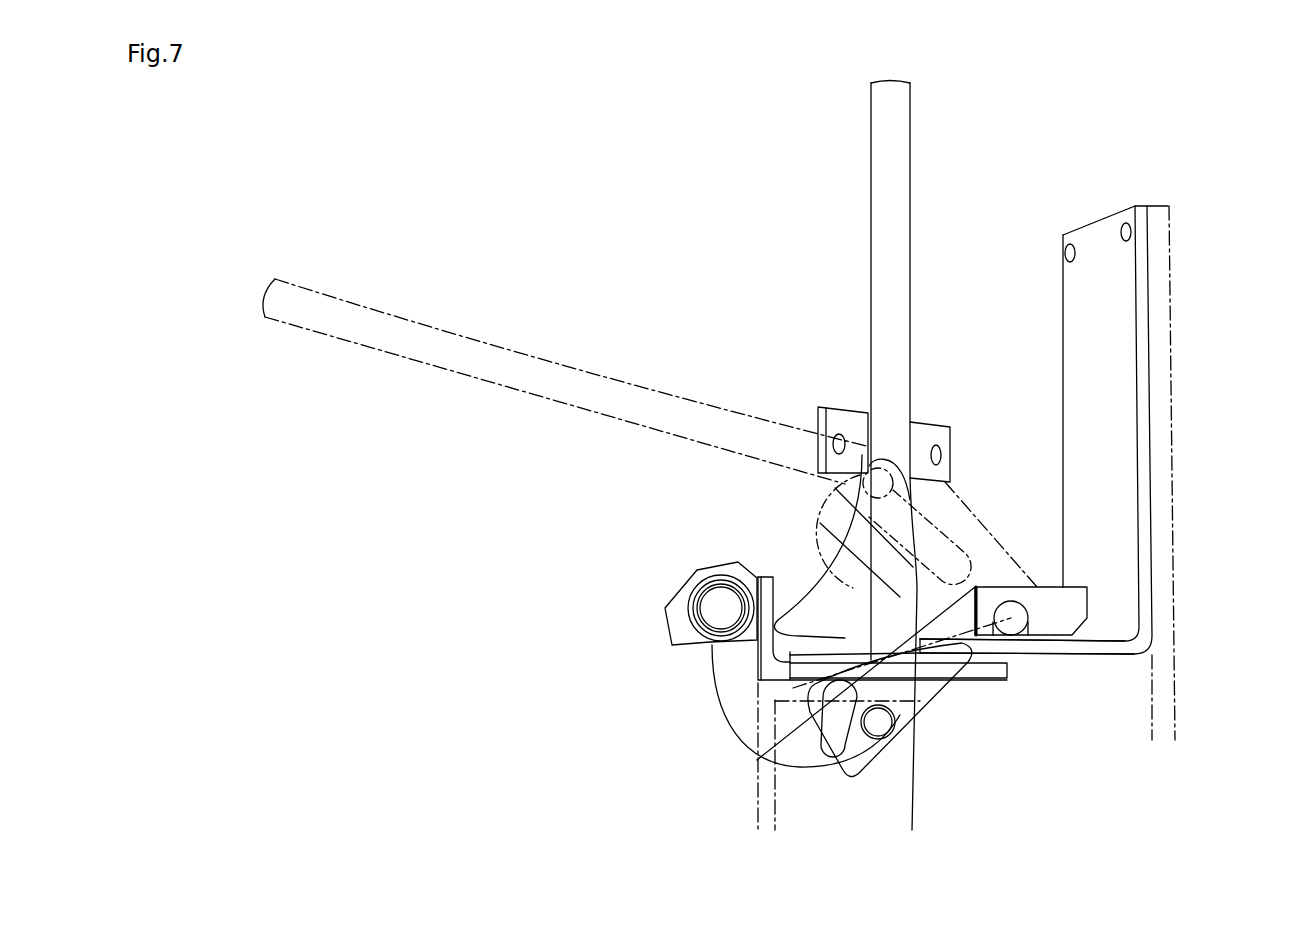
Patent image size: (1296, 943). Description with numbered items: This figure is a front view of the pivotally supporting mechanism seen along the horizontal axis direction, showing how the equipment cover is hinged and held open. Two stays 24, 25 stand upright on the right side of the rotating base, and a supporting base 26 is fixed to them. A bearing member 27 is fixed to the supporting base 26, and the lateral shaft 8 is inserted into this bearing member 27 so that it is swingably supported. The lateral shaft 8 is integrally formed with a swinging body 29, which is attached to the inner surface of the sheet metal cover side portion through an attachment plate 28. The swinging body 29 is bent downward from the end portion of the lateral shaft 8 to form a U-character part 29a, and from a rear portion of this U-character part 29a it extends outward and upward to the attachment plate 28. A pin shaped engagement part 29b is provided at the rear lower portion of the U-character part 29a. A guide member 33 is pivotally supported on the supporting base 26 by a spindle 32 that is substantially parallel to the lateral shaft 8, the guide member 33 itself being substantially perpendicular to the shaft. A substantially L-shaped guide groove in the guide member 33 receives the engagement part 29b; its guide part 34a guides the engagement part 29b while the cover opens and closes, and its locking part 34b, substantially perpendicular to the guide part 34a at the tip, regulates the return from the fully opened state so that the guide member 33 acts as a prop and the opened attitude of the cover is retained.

The lateral shaft 8 is at (712, 612).
The stay 24 is at (1173, 492).
The stay 25 is at (764, 789).
The supporting base 26 is at (980, 656).
The bearing member 27 is at (700, 570).
The attachment plate 28 is at (923, 420).
The swinging body 29 is at (871, 262).
The U-character part 29a is at (735, 718).
The engagement part 29b is at (873, 705).
The spindle 32 is at (1017, 613).
The guide member 33 is at (950, 705).
The guide part 34a is at (880, 740).
The locking part 34b is at (960, 503).